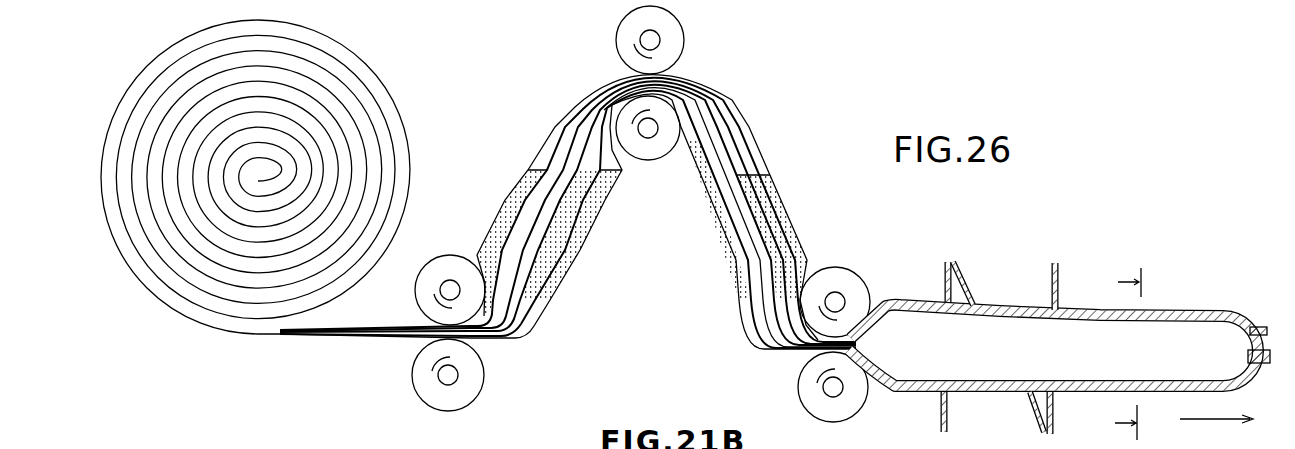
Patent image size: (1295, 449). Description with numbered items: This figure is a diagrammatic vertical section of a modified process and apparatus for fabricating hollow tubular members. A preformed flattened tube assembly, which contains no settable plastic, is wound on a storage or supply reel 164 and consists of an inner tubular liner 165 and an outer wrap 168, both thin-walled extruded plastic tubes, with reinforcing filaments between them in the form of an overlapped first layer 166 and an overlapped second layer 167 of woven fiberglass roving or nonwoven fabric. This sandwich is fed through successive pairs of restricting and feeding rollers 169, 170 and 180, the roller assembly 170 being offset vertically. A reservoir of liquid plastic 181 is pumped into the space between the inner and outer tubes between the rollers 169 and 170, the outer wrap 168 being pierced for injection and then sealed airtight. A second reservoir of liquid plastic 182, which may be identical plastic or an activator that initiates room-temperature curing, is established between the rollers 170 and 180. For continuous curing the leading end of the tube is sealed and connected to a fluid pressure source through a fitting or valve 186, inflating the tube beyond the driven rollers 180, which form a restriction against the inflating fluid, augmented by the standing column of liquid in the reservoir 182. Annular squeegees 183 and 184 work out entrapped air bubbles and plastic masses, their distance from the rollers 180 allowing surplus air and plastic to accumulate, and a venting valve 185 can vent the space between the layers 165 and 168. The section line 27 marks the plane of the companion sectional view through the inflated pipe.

The storage or supply reel 164 is at (340, 68).
The inner tubular liner 165 is at (577, 137).
The first layer 166 is at (563, 143).
The second layer 167 is at (737, 153).
The outer wrap 168 is at (558, 268).
The restricting and feeding rollers 169 is at (440, 256).
The roller assembly 170 is at (684, 30).
The driven rollers 180 is at (838, 268).
The reservoir of liquid plastic 181 is at (535, 172).
The second reservoir of liquid plastic 182 is at (768, 195).
The annular squeegee 183 is at (953, 265).
The annular squeegee 184 is at (1058, 262).
The venting valve 185 is at (1258, 327).
The fitting or valve 186 is at (1260, 365).
The section line 27- 27 is at (1120, 354).